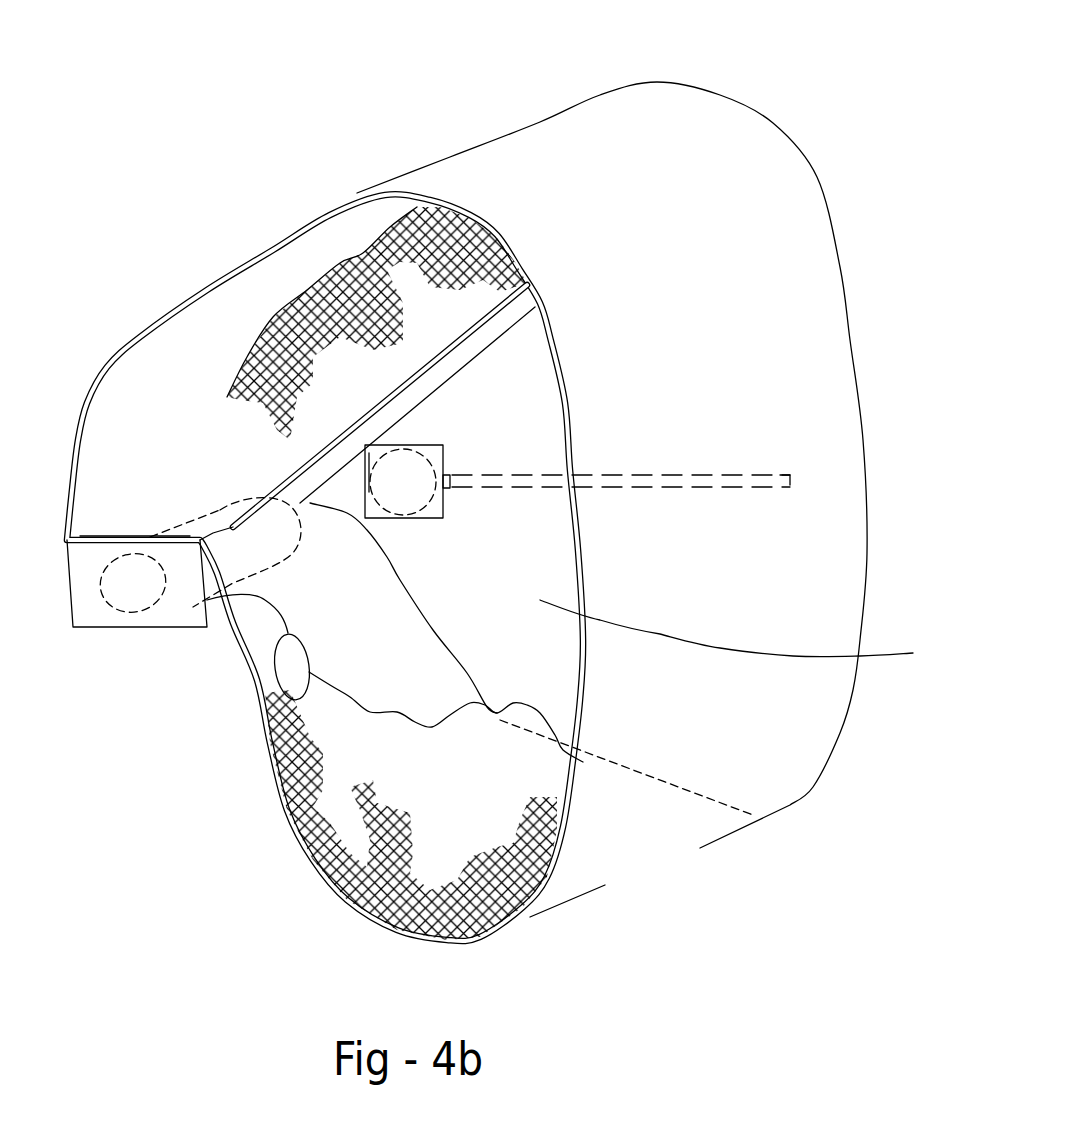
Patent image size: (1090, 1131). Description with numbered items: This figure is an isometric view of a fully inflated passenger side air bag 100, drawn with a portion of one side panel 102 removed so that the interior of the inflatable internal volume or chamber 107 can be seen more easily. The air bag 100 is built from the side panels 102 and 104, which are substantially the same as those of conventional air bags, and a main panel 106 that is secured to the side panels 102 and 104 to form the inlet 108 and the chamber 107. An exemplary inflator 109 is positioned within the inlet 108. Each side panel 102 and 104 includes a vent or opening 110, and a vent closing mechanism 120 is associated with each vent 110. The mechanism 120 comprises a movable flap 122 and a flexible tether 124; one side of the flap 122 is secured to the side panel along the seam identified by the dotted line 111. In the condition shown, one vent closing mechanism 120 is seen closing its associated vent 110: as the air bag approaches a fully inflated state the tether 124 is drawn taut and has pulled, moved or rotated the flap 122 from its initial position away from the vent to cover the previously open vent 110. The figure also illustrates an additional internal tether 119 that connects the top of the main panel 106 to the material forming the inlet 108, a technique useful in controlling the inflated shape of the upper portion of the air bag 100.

The passenger side air bag 100 is at (250, 238).
The side panel 102 is at (340, 820).
The side panel 104 is at (527, 350).
The main panel 106 is at (573, 197).
The inflatable internal volume or chamber 107 is at (755, 631).
The inlet 108 is at (183, 567).
The inflator 109 is at (100, 612).
The vent or opening 110 is at (312, 661).
The dotted line 111 is at (372, 478).
The internal tether 119 is at (327, 457).
The vent closing mechanism 120 is at (507, 490).
The movable flap 122 is at (403, 443).
The flexible tether 124 is at (607, 467).